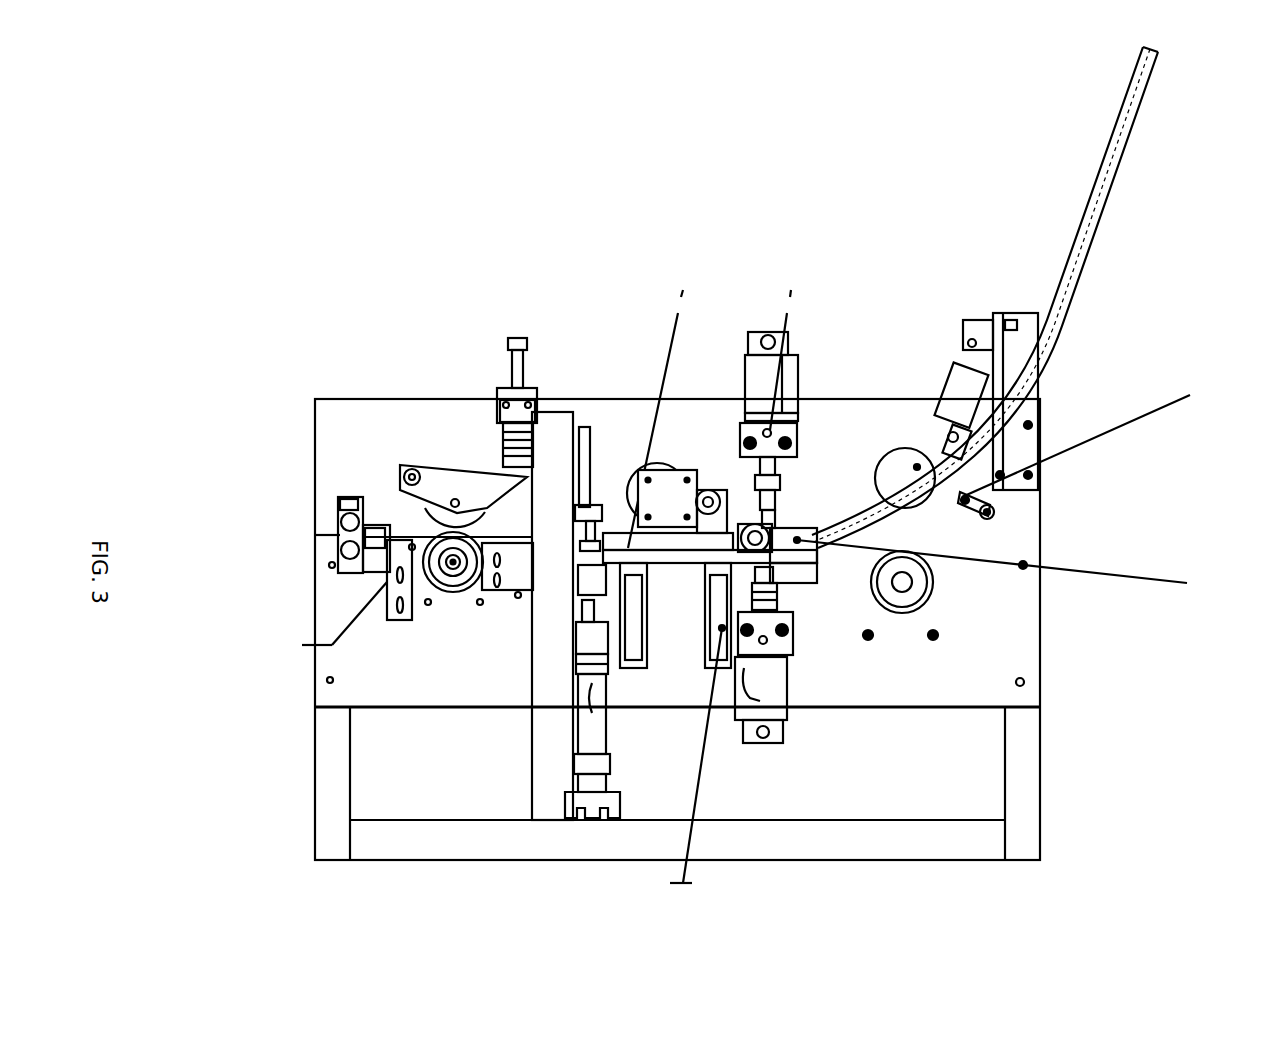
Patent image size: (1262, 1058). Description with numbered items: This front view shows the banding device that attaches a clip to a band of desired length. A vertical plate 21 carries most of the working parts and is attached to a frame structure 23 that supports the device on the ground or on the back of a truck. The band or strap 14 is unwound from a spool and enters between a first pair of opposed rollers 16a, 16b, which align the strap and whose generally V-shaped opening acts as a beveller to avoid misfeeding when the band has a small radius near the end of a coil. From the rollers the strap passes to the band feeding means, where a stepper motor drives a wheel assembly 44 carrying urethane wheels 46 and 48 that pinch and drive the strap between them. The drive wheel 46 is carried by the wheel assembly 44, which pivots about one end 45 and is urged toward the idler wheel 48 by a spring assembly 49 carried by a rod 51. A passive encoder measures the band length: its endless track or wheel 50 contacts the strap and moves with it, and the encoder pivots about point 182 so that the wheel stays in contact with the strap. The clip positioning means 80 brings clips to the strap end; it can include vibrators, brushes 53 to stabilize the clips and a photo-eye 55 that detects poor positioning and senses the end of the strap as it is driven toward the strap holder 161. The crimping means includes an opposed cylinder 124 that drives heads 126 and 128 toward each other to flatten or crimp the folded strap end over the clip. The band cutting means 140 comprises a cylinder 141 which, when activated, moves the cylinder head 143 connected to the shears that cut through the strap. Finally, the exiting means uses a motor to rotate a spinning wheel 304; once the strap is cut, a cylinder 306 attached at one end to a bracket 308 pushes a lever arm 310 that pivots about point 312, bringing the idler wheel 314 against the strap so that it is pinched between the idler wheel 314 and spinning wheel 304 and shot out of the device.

The band or strap 14 is at (1022, 538).
The roller 16a is at (314, 447).
The roller 16b is at (343, 552).
The vertical plate 21 is at (992, 645).
The frame structure 23 is at (1025, 787).
The wheel assembly 44 is at (453, 483).
The pivot end of wheel assembly 45 is at (405, 468).
The urethane drive wheel 46 is at (508, 504).
The urethane idler wheel 48 is at (460, 595).
The spring assembly 49 is at (497, 397).
The endless track or wheel 50 is at (673, 462).
The rod 51 is at (520, 338).
The brushes 53 is at (780, 513).
The photo-eye 55 is at (755, 538).
The clip positioning means 80 is at (1107, 187).
The cylinder 124 is at (767, 683).
The head 126 is at (790, 445).
The head 128 is at (770, 578).
The band cutting means 140 is at (563, 495).
The cylinder 141 is at (595, 722).
The cylinder head 143 is at (420, 613).
The strap holder 161 is at (632, 548).
The pivot point of encoder 182 is at (710, 480).
The spinning wheel 304 is at (948, 590).
The cylinder 306 is at (955, 395).
The bracket 308 is at (1018, 362).
The lever arm 310 is at (1005, 487).
The pivot point 312 is at (1000, 513).
The idler wheel 314 is at (907, 480).